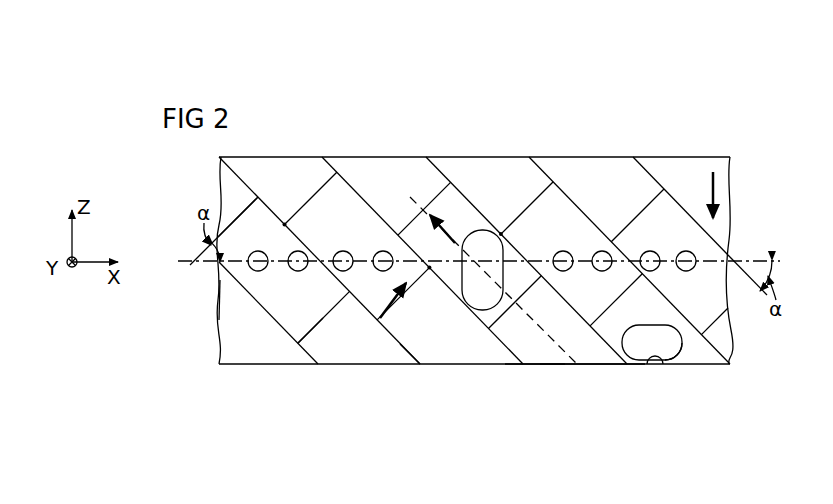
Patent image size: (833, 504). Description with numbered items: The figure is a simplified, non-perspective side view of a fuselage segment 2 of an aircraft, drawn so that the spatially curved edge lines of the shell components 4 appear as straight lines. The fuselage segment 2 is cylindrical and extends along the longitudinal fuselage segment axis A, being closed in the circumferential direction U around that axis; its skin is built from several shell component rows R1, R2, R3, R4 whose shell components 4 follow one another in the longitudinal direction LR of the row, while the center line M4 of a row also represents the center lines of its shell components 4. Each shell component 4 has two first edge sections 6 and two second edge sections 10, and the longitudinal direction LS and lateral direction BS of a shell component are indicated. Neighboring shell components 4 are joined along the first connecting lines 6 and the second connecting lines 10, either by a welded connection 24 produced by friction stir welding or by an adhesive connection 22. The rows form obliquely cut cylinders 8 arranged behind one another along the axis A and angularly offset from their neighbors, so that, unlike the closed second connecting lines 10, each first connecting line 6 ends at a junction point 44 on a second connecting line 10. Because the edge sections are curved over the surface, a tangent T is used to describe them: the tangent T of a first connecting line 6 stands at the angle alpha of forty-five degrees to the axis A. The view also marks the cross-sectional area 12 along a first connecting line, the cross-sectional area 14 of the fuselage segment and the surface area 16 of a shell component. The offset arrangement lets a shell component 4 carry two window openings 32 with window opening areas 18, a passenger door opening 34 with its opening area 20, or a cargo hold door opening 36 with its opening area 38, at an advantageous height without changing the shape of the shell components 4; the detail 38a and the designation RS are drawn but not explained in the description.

The fuselage segment 2 is at (731, 171).
The shell component 4 is at (493, 257).
The first edge section or first connecting line 6 is at (303, 209).
The obliquely cut cylinder 8 is at (514, 369).
The second edge section or second connecting line 10 is at (350, 182).
The cross-sectional area along first connecting line 12 is at (281, 222).
The cross-sectional area of fuselage segment 14 is at (213, 296).
The shell component surface area 16 is at (554, 178).
The window opening area 18 is at (596, 248).
The passenger door opening area 20 is at (501, 231).
The adhesive connection 22 is at (316, 335).
The welded connection 24 is at (420, 367).
The window opening 32 is at (606, 260).
The passenger door opening 34 is at (469, 244).
The cargo hold door opening 36 is at (679, 366).
The cargo hold door opening area 38 is at (649, 326).
The slot notch 38a is at (656, 367).
The junction point 44 is at (428, 266).
The shell component row R1 is at (283, 151).
The shell component row R2 is at (375, 151).
The shell component row R3 is at (490, 151).
The region 4 R4 is at (605, 151).
The longitudinal direction of a shell component row LR is at (424, 183).
The longitudinal direction of a shell component LS is at (451, 246).
The lateral direction of a shell component BS is at (388, 304).
The center line M4 is at (552, 365).
The longitudinal fuselage segment axis A is at (479, 261).
The tangent T is at (206, 249).
The circumferential direction U is at (716, 204).
The rotor blade RS is at (748, 94).